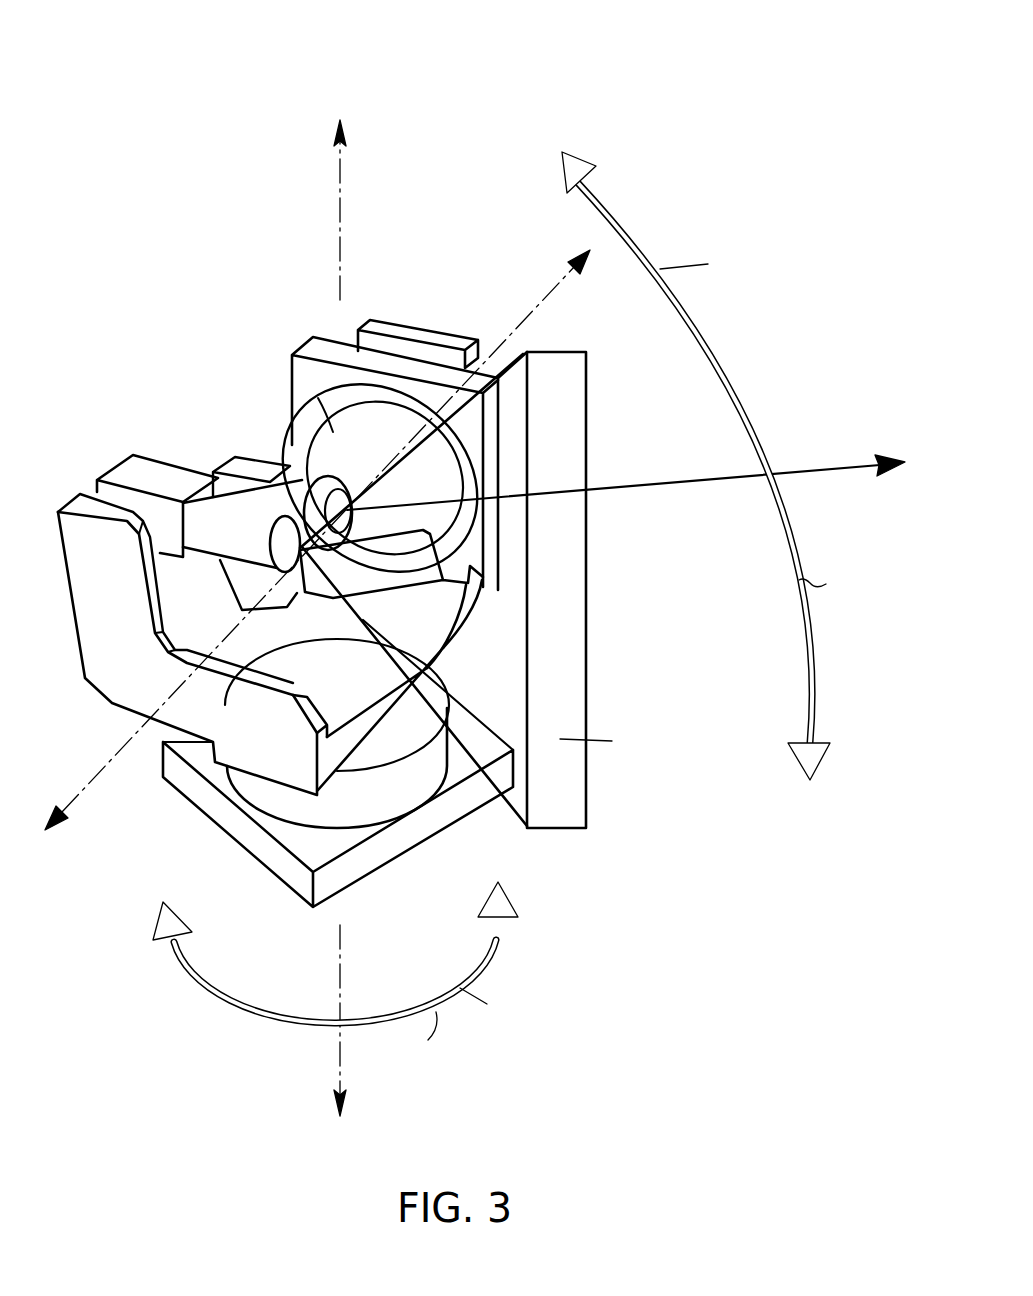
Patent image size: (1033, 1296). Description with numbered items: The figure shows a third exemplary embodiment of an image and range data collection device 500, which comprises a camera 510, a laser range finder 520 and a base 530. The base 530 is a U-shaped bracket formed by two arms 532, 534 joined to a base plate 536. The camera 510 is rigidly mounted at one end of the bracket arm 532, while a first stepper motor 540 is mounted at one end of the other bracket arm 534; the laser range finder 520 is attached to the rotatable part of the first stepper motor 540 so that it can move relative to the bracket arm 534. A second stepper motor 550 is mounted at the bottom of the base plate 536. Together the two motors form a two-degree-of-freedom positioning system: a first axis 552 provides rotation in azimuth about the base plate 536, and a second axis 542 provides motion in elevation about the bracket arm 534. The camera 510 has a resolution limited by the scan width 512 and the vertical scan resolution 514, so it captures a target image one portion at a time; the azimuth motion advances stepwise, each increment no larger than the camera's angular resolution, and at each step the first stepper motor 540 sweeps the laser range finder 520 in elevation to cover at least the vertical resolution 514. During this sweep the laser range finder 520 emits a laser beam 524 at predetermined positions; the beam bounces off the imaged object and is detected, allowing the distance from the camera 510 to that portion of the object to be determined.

The image and range data collection device 500 is at (204, 80).
The camera 510 is at (160, 472).
The scan width 512 is at (560, 832).
The vertical scan resolution 514 is at (590, 560).
The laser range finder 520 is at (297, 485).
The laser beam 524 is at (826, 468).
The base 530 is at (103, 713).
The bracket arm 532 is at (98, 586).
The bracket arm 534 is at (428, 325).
The base plate 536 is at (403, 640).
The first stepper motor 540 is at (333, 427).
The second axis 542 is at (548, 278).
The second stepper motor 550 is at (398, 795).
The first axis 552 is at (340, 1059).